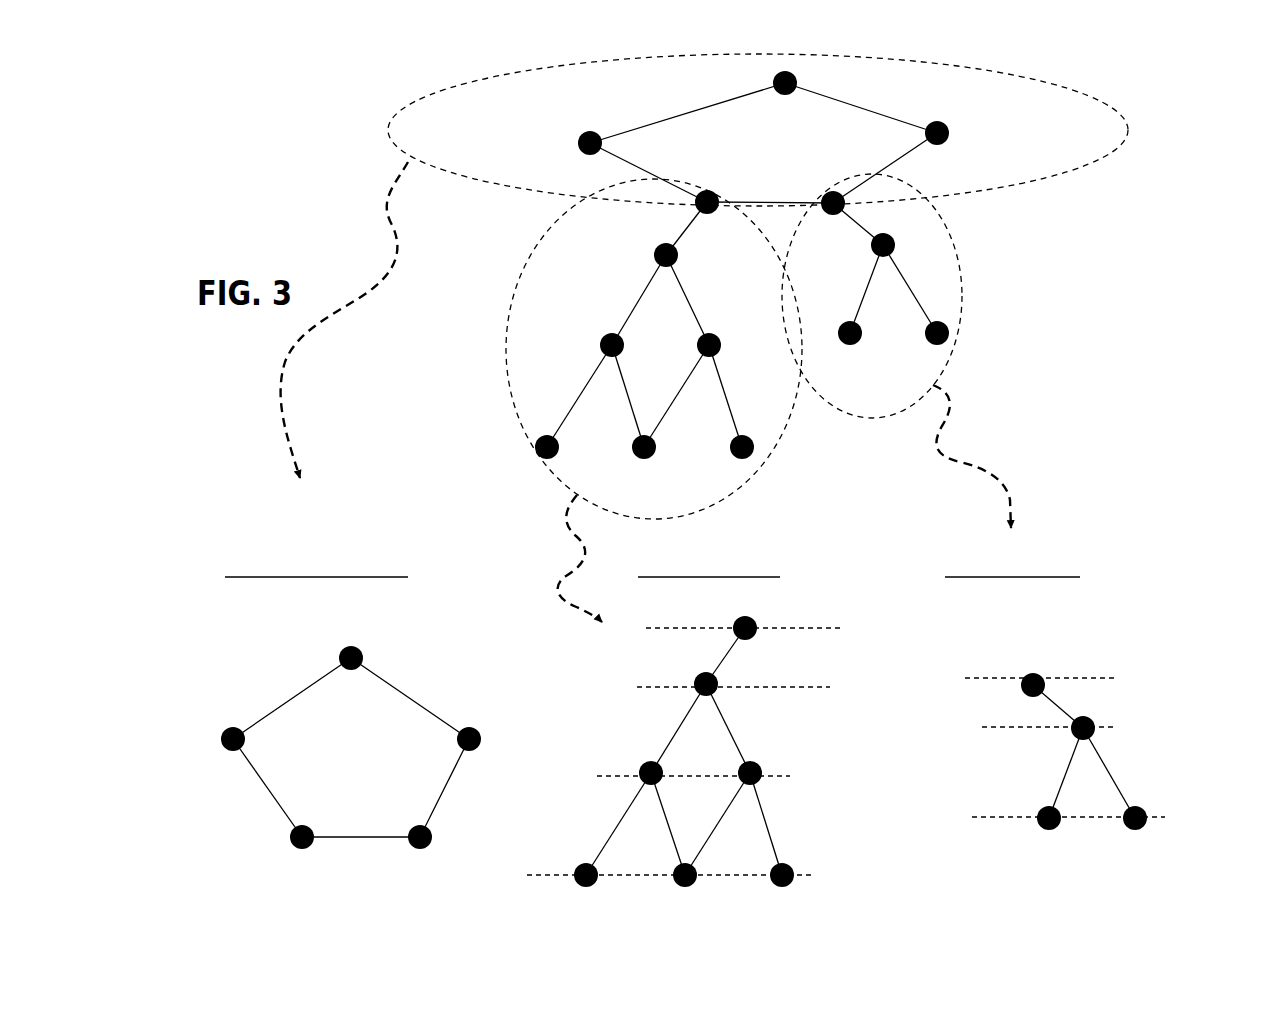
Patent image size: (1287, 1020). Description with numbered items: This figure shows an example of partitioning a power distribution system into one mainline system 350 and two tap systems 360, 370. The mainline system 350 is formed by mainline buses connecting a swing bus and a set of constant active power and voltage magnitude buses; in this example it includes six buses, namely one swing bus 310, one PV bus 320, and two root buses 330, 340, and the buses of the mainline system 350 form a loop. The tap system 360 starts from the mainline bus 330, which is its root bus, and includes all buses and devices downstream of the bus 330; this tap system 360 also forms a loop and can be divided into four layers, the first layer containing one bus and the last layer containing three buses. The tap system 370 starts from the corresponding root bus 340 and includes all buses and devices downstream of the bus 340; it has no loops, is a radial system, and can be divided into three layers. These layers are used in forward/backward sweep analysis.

The swing bus 310 is at (590, 134).
The PV bus 320 is at (940, 124).
The root bus 330 is at (744, 162).
The root bus 340 is at (862, 162).
The mainline system 350 is at (376, 112).
The tap system 360 is at (508, 387).
The tap system 370 is at (961, 260).